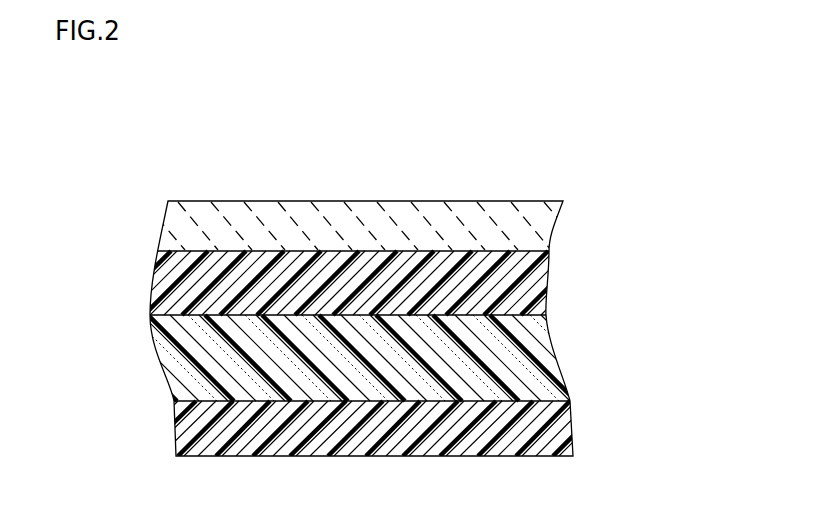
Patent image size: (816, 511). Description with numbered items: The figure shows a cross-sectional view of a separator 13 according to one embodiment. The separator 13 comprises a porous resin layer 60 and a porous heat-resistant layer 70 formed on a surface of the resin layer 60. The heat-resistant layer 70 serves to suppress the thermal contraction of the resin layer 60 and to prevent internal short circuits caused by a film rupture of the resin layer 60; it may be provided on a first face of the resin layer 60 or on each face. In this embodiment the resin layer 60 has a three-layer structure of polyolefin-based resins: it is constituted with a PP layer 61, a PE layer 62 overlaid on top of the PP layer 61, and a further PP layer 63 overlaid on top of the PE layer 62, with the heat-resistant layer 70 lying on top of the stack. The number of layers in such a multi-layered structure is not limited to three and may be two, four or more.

The separator 13 is at (522, 145).
The resin layer 60 is at (402, 353).
The PP layer 61 is at (375, 428).
The PE layer 62 is at (543, 376).
The PP layer 63 is at (547, 300).
The heat-resistant layer 70 is at (540, 240).